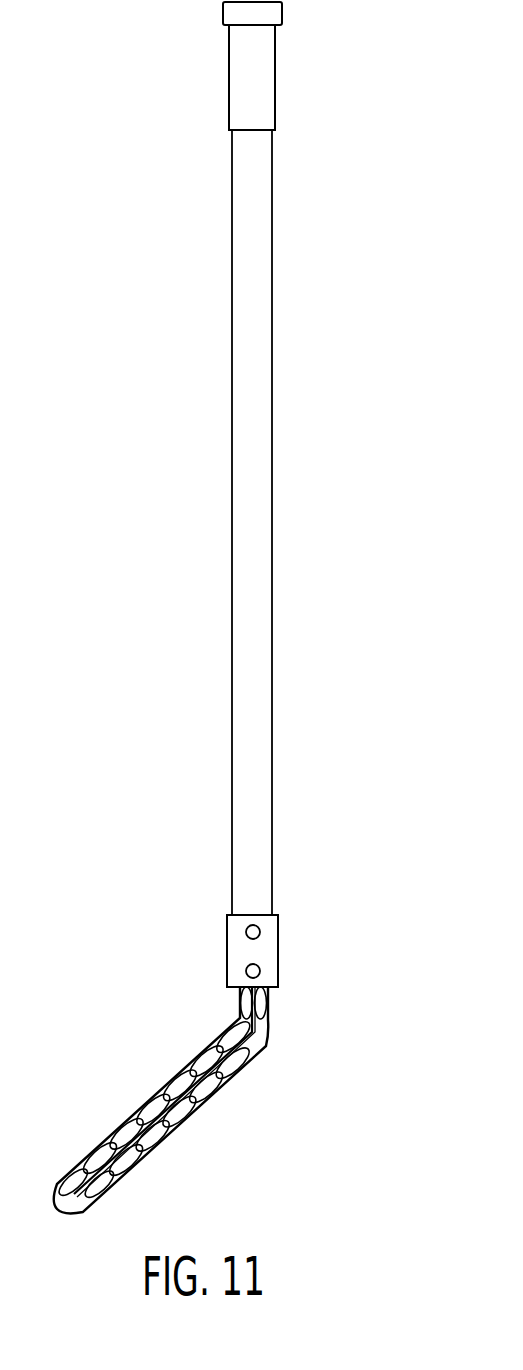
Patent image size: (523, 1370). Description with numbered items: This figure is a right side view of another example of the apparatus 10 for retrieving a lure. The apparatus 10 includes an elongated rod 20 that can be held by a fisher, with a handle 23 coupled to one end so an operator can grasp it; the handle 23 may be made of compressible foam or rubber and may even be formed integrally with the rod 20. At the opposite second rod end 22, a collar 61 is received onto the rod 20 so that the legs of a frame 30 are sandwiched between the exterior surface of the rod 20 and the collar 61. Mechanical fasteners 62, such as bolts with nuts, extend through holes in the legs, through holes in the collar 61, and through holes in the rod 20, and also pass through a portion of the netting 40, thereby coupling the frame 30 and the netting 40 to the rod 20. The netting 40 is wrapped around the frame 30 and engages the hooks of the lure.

The apparatus 10 is at (313, 415).
The rod 20 is at (263, 620).
The second rod end 22 is at (291, 886).
The handle 23 is at (260, 88).
The frame 30 is at (203, 1085).
The netting 40 is at (160, 1143).
The collar 61 is at (273, 929).
The mechanical fasteners 62 is at (245, 936).